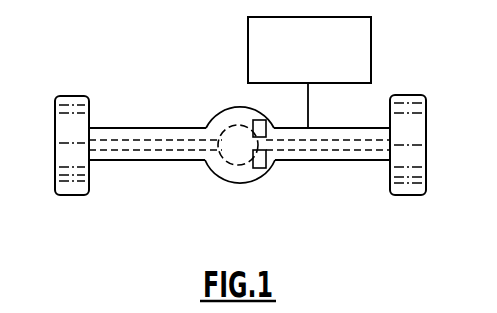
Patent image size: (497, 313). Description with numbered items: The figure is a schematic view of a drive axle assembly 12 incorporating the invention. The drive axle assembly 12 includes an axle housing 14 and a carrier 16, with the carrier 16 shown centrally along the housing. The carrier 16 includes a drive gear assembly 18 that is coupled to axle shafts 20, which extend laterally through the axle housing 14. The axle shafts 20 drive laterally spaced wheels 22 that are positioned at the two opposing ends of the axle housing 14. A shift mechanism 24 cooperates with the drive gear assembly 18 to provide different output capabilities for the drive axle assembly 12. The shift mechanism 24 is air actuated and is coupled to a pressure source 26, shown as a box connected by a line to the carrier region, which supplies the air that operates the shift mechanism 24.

The drive axle assembly 12 is at (182, 115).
The axle housing 14 is at (160, 161).
The carrier 16 is at (223, 109).
The drive gear assembly 18 is at (236, 164).
The axle shafts 20 is at (129, 151).
The wheels 22 is at (77, 96).
The shift mechanism 24 is at (258, 170).
The pressure source 26 is at (372, 33).